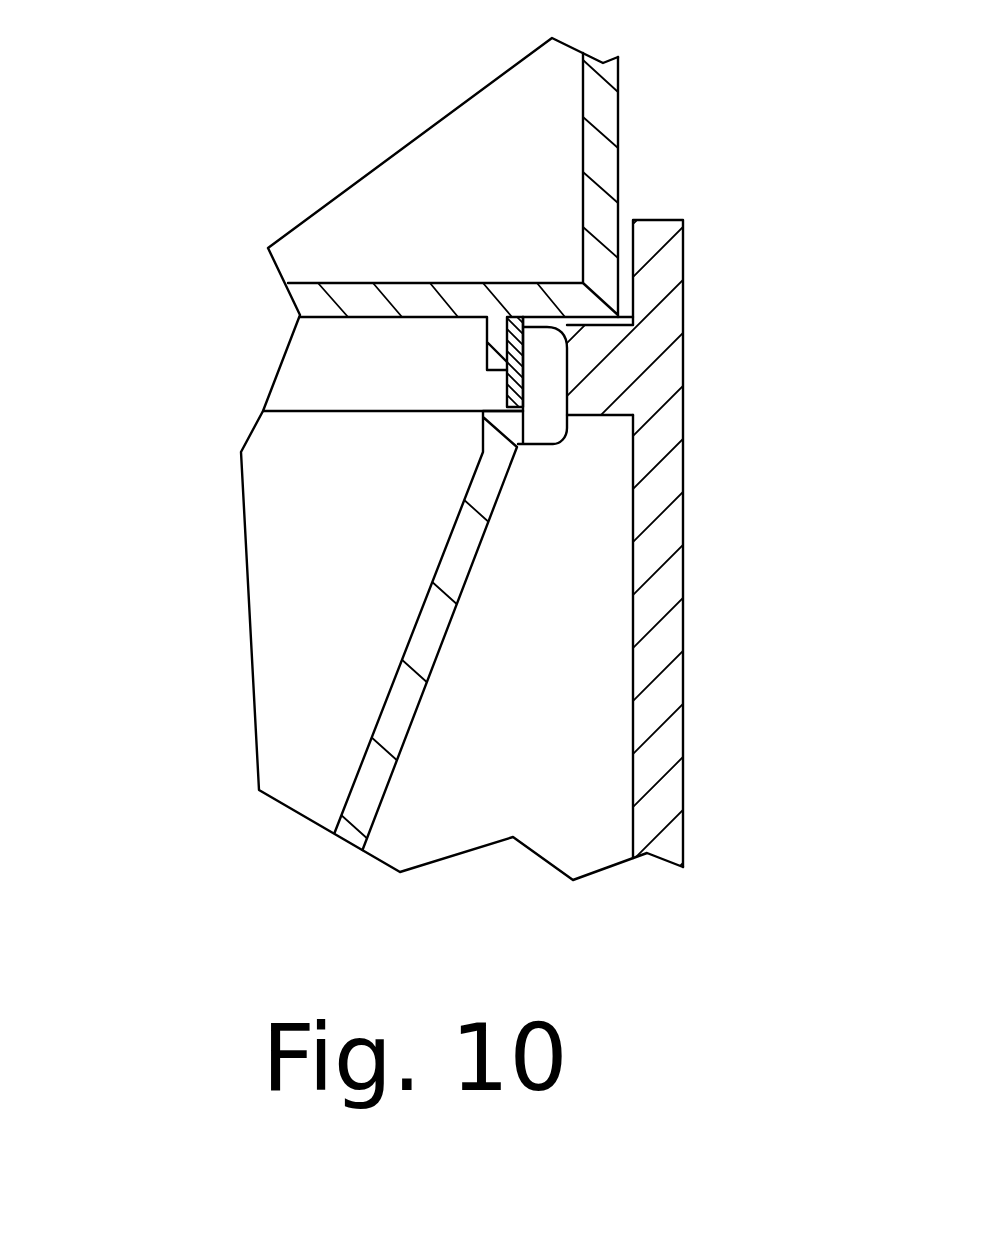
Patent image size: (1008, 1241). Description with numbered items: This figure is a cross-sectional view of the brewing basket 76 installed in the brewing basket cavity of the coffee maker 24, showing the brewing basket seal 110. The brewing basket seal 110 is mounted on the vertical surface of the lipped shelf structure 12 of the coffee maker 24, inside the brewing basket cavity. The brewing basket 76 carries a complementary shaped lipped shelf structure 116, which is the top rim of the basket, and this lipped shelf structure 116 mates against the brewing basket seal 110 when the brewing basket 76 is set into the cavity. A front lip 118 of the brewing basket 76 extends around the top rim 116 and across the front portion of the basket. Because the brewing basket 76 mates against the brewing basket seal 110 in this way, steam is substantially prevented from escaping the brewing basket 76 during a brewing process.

The lipped shelf structure 12 is at (527, 343).
The coffee maker 24 is at (618, 87).
The brewing basket 76 is at (642, 407).
The brewing basket seal 110 is at (507, 385).
The lipped shelf structure of the brewing basket 116 is at (538, 410).
The front lip 118 is at (662, 220).